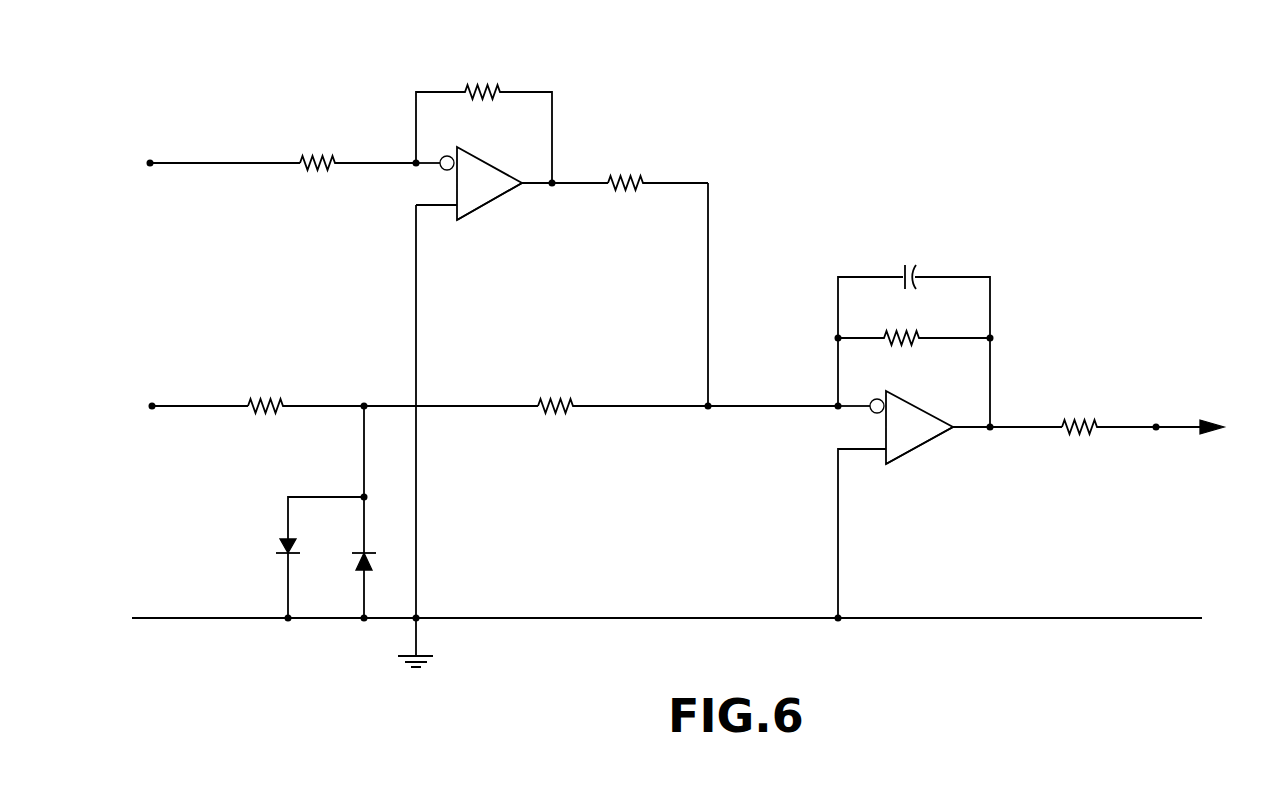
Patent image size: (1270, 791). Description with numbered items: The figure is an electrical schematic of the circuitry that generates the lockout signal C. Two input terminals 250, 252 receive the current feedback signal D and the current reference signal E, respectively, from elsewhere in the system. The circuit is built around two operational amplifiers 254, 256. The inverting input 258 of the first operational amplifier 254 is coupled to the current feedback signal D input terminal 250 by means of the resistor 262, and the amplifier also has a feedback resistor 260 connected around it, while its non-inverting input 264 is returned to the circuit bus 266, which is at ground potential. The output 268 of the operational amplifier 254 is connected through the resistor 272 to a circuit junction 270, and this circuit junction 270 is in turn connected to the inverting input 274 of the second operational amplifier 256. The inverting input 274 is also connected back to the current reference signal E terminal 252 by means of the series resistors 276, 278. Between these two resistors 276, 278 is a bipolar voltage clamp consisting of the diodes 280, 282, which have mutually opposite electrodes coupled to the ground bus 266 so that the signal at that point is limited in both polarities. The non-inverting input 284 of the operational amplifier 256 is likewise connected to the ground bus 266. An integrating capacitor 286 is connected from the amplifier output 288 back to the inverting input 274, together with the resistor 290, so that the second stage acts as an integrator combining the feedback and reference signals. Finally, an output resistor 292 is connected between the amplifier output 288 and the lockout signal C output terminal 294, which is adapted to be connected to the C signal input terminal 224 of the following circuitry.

The input terminal 250 is at (152, 156).
The input terminal 252 is at (155, 394).
The operational amplifier 254 is at (495, 207).
The operational amplifier 256 is at (920, 453).
The inverting input 258 is at (447, 156).
The feedback resistor 260 is at (492, 82).
The resistor 262 is at (325, 151).
The non-inverting input 264 is at (455, 222).
The circuit bus 266 is at (515, 617).
The output 268 is at (525, 178).
The circuit junction 270 is at (712, 401).
The resistor 272 is at (632, 170).
The inverting input 274 is at (870, 394).
The resistor 276 is at (275, 394).
The resistor 278 is at (565, 394).
The diode 280 is at (268, 545).
The diode 282 is at (353, 561).
The non-inverting input 284 is at (883, 463).
The integrating capacitor 286 is at (912, 262).
The amplifier output 288 is at (953, 419).
The resistor 290 is at (926, 334).
The output resistor 292 is at (1092, 415).
The output terminal 294 is at (1160, 415).
The C signal input terminal 224 is at (1229, 431).